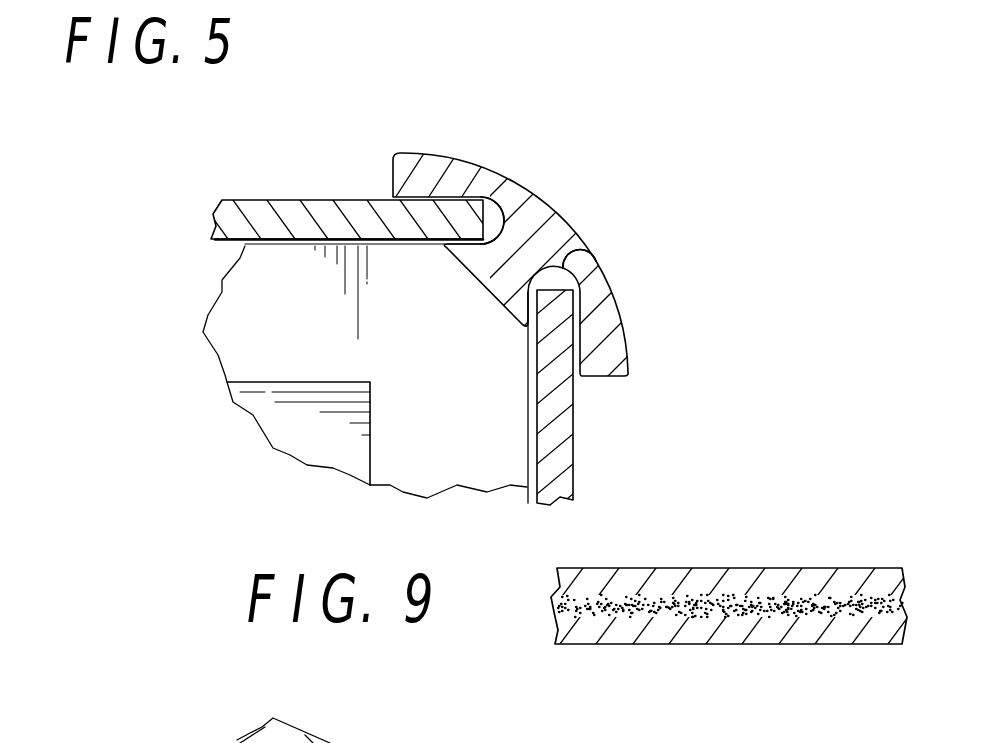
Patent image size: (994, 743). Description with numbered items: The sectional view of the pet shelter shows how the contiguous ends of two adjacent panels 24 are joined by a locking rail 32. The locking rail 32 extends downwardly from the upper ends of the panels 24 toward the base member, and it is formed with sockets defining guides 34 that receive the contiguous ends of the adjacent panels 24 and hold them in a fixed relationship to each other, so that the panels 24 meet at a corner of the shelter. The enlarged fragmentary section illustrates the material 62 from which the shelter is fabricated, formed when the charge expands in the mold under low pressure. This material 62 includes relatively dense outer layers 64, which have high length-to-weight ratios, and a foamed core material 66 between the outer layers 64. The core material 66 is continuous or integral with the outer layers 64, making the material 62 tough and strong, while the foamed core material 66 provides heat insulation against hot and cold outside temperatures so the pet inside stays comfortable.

In FIG. 5, the panel 24 is at (286, 200).
In FIG. 5, the locking rail 32 is at (547, 173).
In FIG. 5, the guide 34 is at (507, 226).
In FIG. 9, the material 62 is at (690, 589).
In FIG. 9, the outer layer 64 is at (857, 575).
In FIG. 9, the foamed core material 66 is at (558, 605).